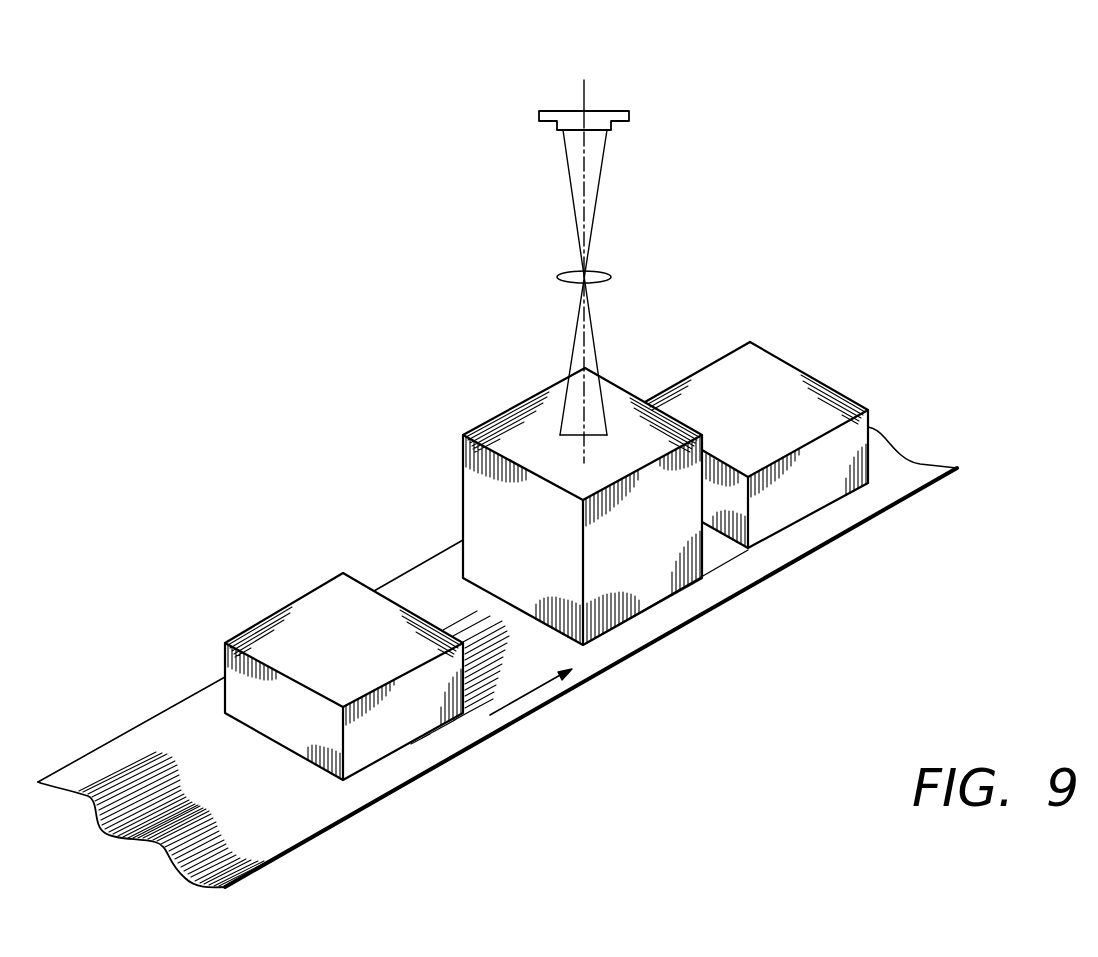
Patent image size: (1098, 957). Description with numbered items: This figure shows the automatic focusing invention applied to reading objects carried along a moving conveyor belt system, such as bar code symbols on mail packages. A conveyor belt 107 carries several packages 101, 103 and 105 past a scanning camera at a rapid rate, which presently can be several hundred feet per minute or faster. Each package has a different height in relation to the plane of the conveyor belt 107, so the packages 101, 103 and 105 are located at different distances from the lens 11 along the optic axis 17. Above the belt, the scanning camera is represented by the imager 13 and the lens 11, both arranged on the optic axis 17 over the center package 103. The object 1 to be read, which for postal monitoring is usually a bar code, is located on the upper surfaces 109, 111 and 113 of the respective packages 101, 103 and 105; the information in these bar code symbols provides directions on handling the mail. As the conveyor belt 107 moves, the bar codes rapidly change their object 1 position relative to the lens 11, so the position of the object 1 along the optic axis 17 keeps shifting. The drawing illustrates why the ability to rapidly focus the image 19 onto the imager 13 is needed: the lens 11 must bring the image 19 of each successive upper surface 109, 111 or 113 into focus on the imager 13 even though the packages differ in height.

The object 1 is at (573, 428).
The lens 11 is at (612, 277).
The imager 13 is at (623, 110).
The optic axis 17 is at (582, 97).
The image 19 is at (577, 130).
The package 101 is at (278, 613).
The package 103 is at (463, 500).
The package 105 is at (868, 453).
The conveyor belt 107 is at (653, 643).
The upper surface 109 is at (338, 635).
The upper surface 111 is at (628, 417).
The upper surface 113 is at (767, 388).